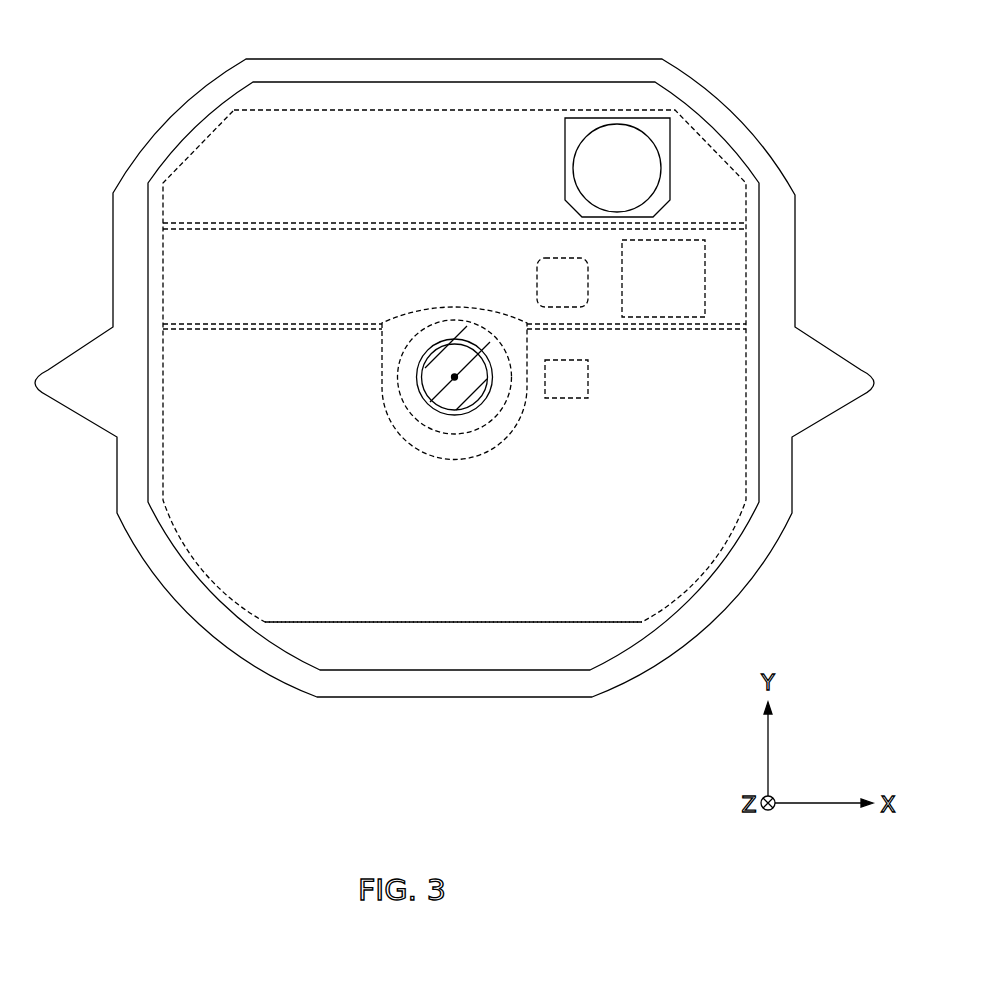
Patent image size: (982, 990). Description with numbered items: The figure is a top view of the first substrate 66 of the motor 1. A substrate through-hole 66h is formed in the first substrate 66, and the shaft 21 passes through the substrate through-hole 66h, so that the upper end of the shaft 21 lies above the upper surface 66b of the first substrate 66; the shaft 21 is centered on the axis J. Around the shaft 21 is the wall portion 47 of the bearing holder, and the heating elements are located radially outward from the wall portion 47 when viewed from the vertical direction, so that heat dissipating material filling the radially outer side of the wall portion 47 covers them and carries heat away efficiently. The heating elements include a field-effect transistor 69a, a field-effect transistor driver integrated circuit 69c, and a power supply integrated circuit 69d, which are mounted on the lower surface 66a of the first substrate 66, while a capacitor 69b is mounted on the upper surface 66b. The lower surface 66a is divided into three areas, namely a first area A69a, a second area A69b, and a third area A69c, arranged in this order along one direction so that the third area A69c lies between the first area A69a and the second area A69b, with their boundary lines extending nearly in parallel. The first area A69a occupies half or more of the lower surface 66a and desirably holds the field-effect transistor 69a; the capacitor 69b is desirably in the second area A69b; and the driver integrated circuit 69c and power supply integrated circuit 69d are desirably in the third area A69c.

The robot 1 is at (803, 58).
The first substrate 66 is at (618, 95).
The lower surface 66a is at (700, 587).
The upper surface 66b is at (728, 542).
The substrate through-hole 66h is at (441, 407).
The shaft 21 is at (462, 400).
The wall portion 47 is at (430, 363).
The axis J is at (455, 377).
The field-effect transistor 69a is at (565, 398).
The capacitor 69b is at (652, 168).
The field-effect transistor driver integrated circuit 69c is at (588, 280).
The power supply integrated circuit 69d is at (705, 280).
The first area A69a is at (163, 465).
The second area A69b is at (193, 147).
The third area A69c is at (163, 273).